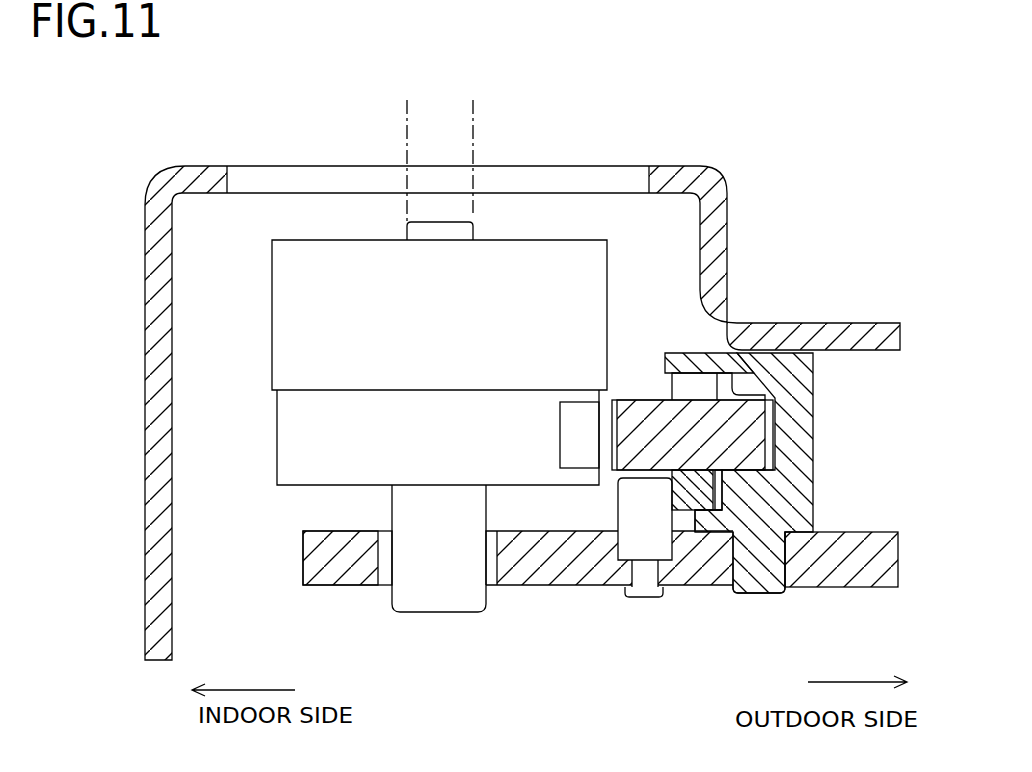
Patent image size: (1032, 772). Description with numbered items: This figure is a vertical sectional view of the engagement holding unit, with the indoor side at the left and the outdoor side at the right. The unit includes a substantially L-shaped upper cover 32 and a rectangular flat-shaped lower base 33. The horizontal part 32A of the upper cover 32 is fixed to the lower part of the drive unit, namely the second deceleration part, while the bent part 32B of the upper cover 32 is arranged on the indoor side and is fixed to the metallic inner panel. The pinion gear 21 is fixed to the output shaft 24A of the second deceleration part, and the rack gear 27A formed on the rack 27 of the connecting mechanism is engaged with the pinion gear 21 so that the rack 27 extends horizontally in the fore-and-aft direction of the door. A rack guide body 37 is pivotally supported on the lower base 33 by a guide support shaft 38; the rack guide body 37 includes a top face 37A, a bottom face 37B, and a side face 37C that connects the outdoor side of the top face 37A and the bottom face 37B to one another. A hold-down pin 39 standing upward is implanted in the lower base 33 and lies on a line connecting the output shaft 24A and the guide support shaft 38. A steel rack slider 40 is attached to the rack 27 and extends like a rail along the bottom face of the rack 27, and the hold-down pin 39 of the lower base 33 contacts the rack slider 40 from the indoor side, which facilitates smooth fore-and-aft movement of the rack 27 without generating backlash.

The pinion gear 21 is at (325, 447).
The output shaft 24A is at (403, 230).
The rack 27 is at (742, 430).
The rack gear 27A is at (573, 430).
The upper cover 32 is at (208, 170).
The horizontal part 32A is at (668, 168).
The bent part 32B is at (170, 587).
The lower base 33 is at (563, 588).
The rack guide body 37 is at (813, 458).
The top face 37A is at (690, 351).
The bottom face 37B is at (702, 522).
The side face 37C is at (798, 432).
The guide support shaft 38 is at (762, 567).
The hold-down pin 39 is at (643, 532).
The rack slider 40 is at (700, 492).